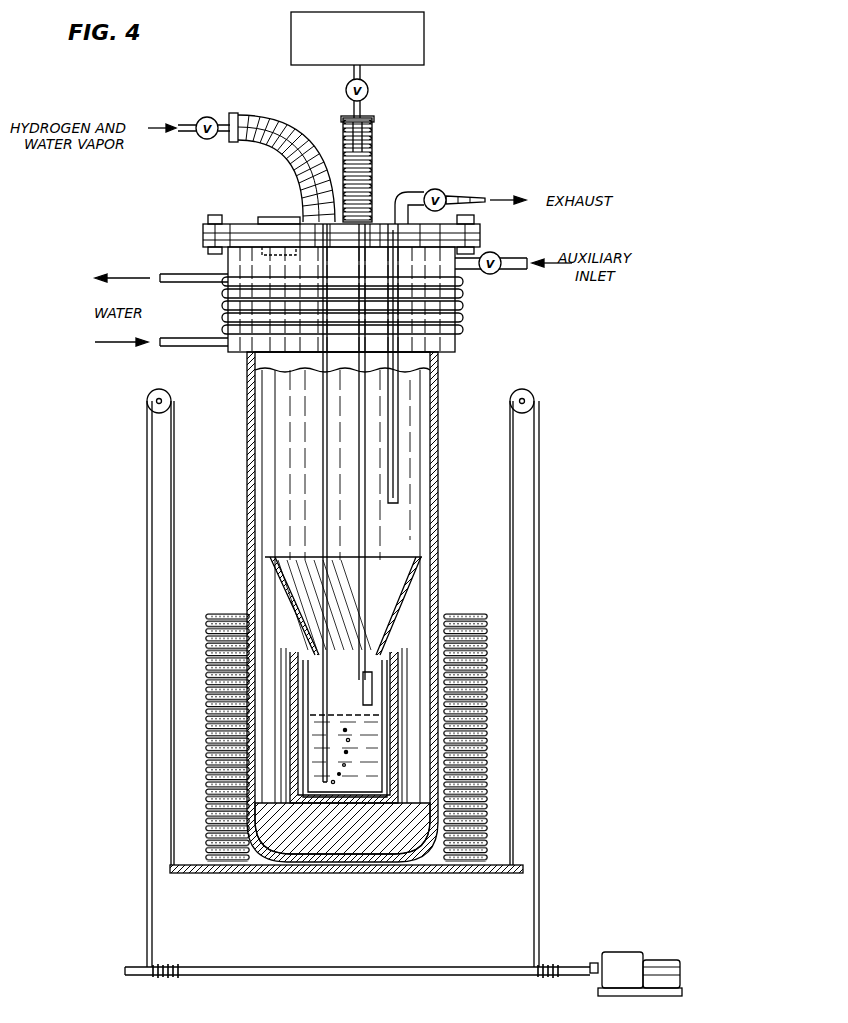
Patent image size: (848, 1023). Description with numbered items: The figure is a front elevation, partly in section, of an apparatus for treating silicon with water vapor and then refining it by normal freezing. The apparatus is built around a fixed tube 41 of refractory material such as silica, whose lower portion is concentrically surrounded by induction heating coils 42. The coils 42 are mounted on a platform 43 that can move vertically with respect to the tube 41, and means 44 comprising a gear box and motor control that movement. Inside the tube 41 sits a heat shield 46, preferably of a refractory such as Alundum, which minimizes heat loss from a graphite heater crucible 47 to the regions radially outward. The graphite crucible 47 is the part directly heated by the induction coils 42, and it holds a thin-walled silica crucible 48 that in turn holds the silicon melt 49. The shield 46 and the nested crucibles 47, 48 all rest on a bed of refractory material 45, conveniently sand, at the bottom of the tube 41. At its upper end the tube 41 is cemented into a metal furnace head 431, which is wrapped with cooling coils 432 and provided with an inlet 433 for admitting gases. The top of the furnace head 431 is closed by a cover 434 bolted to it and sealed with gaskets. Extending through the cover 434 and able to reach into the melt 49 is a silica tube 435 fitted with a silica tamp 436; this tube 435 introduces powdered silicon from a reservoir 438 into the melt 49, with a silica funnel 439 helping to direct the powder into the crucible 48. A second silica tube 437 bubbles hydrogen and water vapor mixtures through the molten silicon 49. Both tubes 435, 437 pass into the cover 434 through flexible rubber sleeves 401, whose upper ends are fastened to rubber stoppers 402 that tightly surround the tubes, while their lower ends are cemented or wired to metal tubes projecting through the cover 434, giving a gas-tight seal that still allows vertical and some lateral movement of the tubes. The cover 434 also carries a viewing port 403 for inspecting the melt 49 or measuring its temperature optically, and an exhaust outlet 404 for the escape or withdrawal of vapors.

The tube 41 is at (438, 468).
The induction heating coils 42 is at (463, 613).
The platform 43 is at (509, 874).
The means comprising a gear box and motor 44 is at (636, 960).
The bed of refractory material 45 is at (331, 845).
The heat shield 46 is at (405, 810).
The graphite heater crucible 47 is at (396, 806).
The silica crucible 48 is at (364, 800).
The silicon melt 49 is at (345, 749).
The flexible rubber sleeves 401 is at (344, 152).
The stoppers 402 is at (240, 112).
The viewing port 403 is at (264, 218).
The exhaust outlet 404 is at (462, 198).
The furnace head 431 is at (460, 343).
The cooling coils 432 is at (466, 318).
The inlet 433 is at (506, 258).
The cover 434 is at (205, 234).
The silica tube 435 is at (367, 526).
The silica tamp 436 is at (364, 693).
The second silica tube 437 is at (325, 548).
The reservoir 438 is at (422, 36).
The silica funnel 439 is at (405, 567).